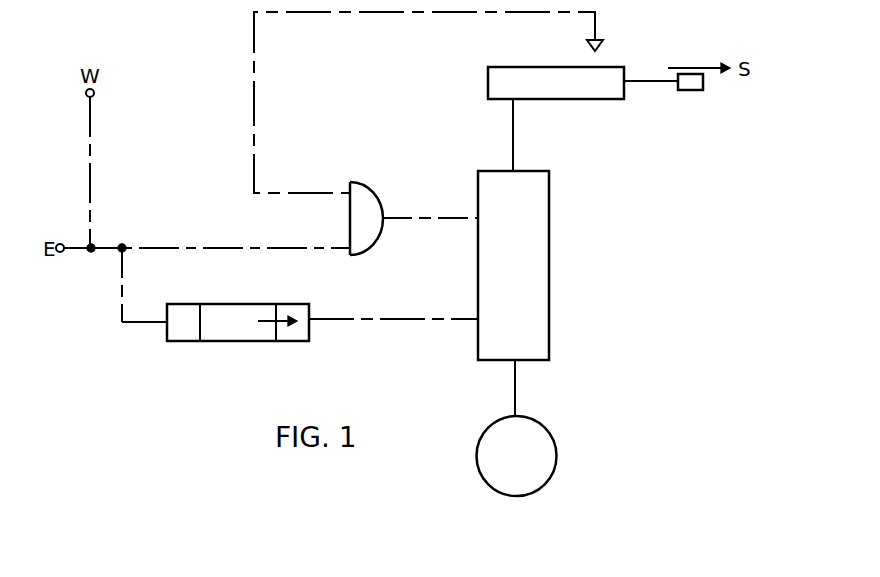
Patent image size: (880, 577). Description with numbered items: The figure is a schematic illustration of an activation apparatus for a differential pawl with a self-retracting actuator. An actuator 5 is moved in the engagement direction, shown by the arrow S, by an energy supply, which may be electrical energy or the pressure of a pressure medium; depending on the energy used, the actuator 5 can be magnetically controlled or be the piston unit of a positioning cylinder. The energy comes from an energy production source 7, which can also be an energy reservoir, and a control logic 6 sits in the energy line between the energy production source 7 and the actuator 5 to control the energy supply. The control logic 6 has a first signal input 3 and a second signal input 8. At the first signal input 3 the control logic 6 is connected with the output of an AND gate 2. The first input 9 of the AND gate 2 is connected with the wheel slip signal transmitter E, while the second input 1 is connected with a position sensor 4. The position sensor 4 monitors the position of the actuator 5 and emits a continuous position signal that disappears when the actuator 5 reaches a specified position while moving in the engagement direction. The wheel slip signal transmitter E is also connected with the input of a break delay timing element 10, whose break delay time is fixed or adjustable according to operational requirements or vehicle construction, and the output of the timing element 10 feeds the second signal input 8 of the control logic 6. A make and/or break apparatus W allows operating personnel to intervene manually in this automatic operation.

The second input 1 is at (350, 193).
The AND gate 2 is at (374, 178).
The first signal input 3 is at (477, 216).
The position sensor 4 is at (614, 45).
The actuator 5 is at (637, 90).
The control logic 6 is at (558, 255).
The energy production source 7 is at (545, 447).
The second signal input 8 is at (477, 320).
The first input 9 is at (350, 247).
The break delay timing element 10 is at (250, 346).